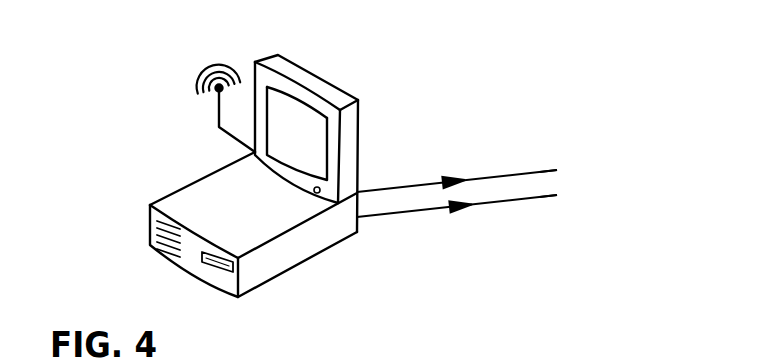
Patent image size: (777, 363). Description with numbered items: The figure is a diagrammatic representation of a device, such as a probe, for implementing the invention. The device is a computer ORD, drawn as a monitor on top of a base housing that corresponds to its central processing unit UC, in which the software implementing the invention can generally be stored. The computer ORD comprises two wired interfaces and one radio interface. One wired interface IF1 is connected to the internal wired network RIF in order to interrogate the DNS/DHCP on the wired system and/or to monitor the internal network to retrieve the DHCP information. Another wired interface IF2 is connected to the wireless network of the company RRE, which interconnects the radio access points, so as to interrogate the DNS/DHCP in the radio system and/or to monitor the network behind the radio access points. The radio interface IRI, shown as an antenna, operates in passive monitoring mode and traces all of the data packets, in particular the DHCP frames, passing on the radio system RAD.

The computer ORD is at (221, 204).
The central processing unit UC is at (150, 230).
The radio interface IRI is at (217, 108).
The radio system RAD is at (205, 65).
The wired interface IF1 is at (405, 187).
The wired interface IF2 is at (408, 212).
The internal wired network RIF is at (573, 170).
The wireless network of the company RRE is at (580, 197).